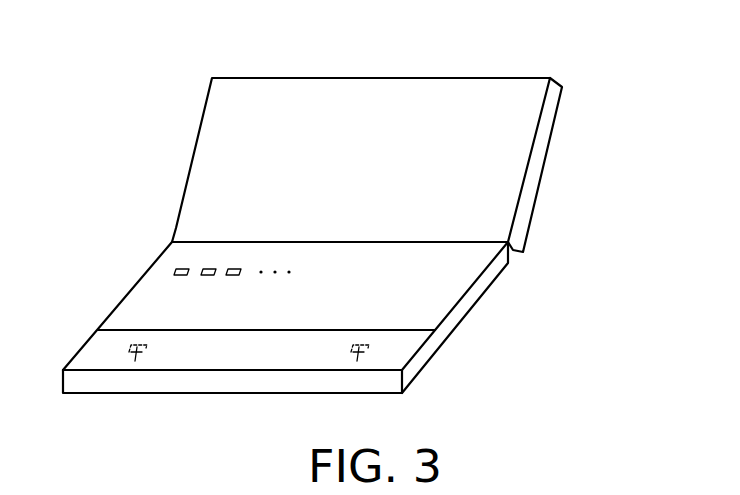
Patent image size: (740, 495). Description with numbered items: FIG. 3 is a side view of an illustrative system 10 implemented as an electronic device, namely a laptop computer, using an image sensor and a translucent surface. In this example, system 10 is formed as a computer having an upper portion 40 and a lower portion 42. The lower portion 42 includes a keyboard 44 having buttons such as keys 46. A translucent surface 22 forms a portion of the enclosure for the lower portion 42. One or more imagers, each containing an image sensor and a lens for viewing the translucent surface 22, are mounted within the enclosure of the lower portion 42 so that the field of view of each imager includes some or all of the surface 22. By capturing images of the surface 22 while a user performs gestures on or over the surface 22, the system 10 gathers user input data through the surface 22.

The system 10 is at (154, 42).
The translucent surface 22 is at (398, 349).
The upper portion 40 is at (490, 158).
The lower portion 42 is at (468, 300).
The keyboard 44 is at (165, 303).
The keys 46 is at (178, 268).